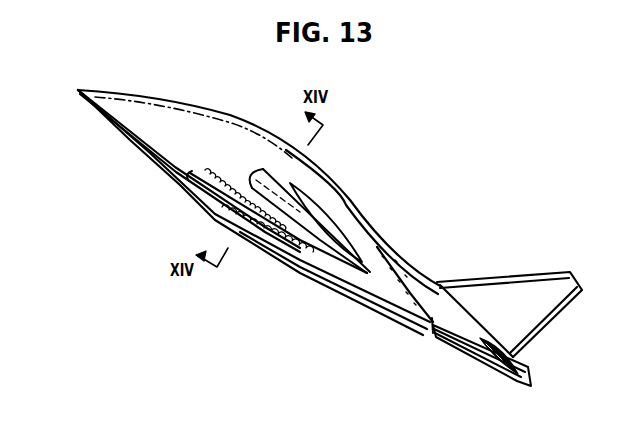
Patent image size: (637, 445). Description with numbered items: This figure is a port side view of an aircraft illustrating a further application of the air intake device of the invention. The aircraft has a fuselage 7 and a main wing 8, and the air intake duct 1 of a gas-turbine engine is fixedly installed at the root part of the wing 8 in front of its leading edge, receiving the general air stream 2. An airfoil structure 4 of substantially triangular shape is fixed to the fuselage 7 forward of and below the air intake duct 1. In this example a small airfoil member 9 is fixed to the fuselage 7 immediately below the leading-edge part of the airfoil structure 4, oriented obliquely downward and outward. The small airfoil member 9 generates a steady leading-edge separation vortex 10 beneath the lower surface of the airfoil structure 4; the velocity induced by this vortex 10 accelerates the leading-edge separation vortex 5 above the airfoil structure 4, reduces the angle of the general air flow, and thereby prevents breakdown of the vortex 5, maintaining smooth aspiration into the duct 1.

The air intake duct 1 is at (266, 181).
The air stream 2 is at (184, 193).
The airfoil structure 4 is at (217, 205).
The leading-edge separation vortex 5 is at (300, 245).
The fuselage 7 is at (451, 331).
The main wing 8 is at (378, 247).
The small airfoil member 9 is at (188, 176).
The leading-edge separation vortex of small airfoil member 10 is at (265, 236).